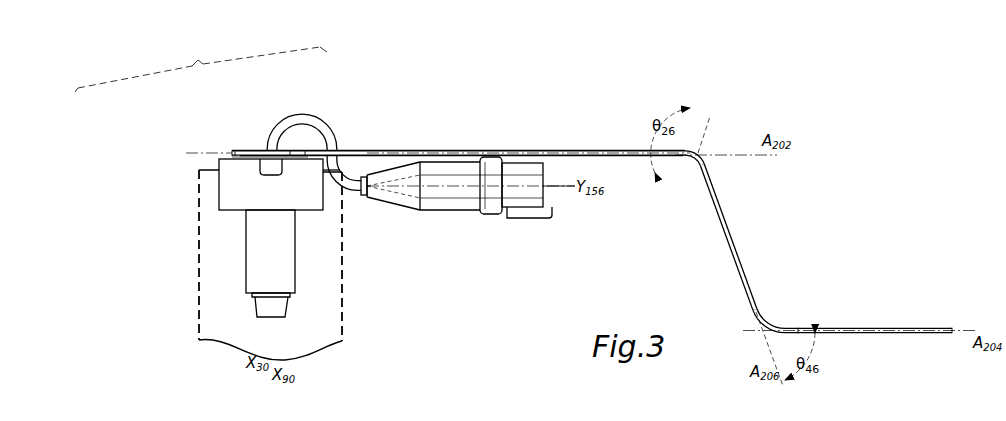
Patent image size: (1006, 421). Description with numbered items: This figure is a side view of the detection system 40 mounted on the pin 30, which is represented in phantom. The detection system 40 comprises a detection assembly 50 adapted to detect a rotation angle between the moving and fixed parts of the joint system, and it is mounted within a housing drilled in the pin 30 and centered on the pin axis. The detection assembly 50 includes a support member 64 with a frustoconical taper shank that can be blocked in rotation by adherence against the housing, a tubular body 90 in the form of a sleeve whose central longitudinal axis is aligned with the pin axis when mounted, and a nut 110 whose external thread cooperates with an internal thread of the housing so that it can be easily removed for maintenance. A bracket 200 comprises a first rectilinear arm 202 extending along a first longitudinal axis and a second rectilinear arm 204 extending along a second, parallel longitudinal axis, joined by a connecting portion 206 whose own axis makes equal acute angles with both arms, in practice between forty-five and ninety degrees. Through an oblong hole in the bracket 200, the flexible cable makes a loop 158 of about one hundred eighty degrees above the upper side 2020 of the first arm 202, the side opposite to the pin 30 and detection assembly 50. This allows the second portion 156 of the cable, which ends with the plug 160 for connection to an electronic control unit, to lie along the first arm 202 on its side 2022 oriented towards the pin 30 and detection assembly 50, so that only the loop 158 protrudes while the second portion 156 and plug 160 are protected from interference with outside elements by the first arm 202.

The pin 30 is at (328, 331).
The detection system 40 is at (201, 65).
The detection assembly 50 is at (235, 245).
The support member 64 is at (260, 305).
The tubular body 90 is at (257, 273).
The nut 110 is at (307, 194).
The second portion of cable 156 is at (349, 191).
The loop 158 is at (272, 126).
The plug 160 is at (448, 205).
The bracket 200 is at (580, 197).
The first rectilinear arm 202 is at (487, 150).
The second rectilinear arm 204 is at (882, 328).
The connecting portion 206 is at (718, 204).
The upper side of arm 2020 is at (622, 148).
The side of arm 2022 is at (637, 158).